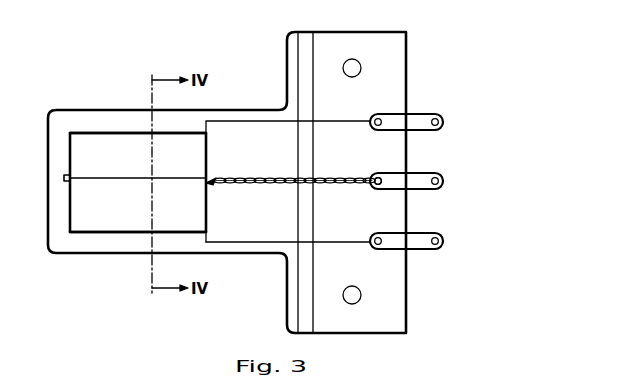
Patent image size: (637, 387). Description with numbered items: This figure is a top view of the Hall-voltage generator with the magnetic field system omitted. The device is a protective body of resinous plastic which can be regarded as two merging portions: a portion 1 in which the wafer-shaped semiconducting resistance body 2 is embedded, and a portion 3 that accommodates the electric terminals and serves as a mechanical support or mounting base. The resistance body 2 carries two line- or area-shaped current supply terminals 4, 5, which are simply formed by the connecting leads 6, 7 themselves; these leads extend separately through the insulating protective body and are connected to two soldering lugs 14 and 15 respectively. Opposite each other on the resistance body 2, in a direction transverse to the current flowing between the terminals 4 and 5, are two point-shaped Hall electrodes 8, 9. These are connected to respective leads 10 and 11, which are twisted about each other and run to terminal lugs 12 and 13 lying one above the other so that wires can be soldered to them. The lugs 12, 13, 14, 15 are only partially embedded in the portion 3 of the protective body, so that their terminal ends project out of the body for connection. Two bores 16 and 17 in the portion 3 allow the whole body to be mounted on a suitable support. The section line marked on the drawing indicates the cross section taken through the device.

The portion of the protective body containing the resistance body 1 is at (50, 144).
The resistance body 2 is at (78, 213).
The portion of the protective body accommodating the terminals 3 is at (393, 55).
The current supply terminal 4 is at (107, 132).
The current supply terminal 5 is at (104, 233).
The connecting lead 6 is at (262, 120).
The connecting lead 7 is at (262, 243).
The Hall electrode 8 is at (65, 181).
The Hall electrode 9 is at (208, 184).
The lead 10 is at (256, 179).
The lead 11 is at (256, 183).
The terminal lug 12 is at (378, 181).
The terminal lug 13 is at (443, 181).
The soldering lug 14 is at (443, 241).
The soldering lug 15 is at (443, 122).
The bore 16 is at (351, 64).
The bore 17 is at (357, 290).